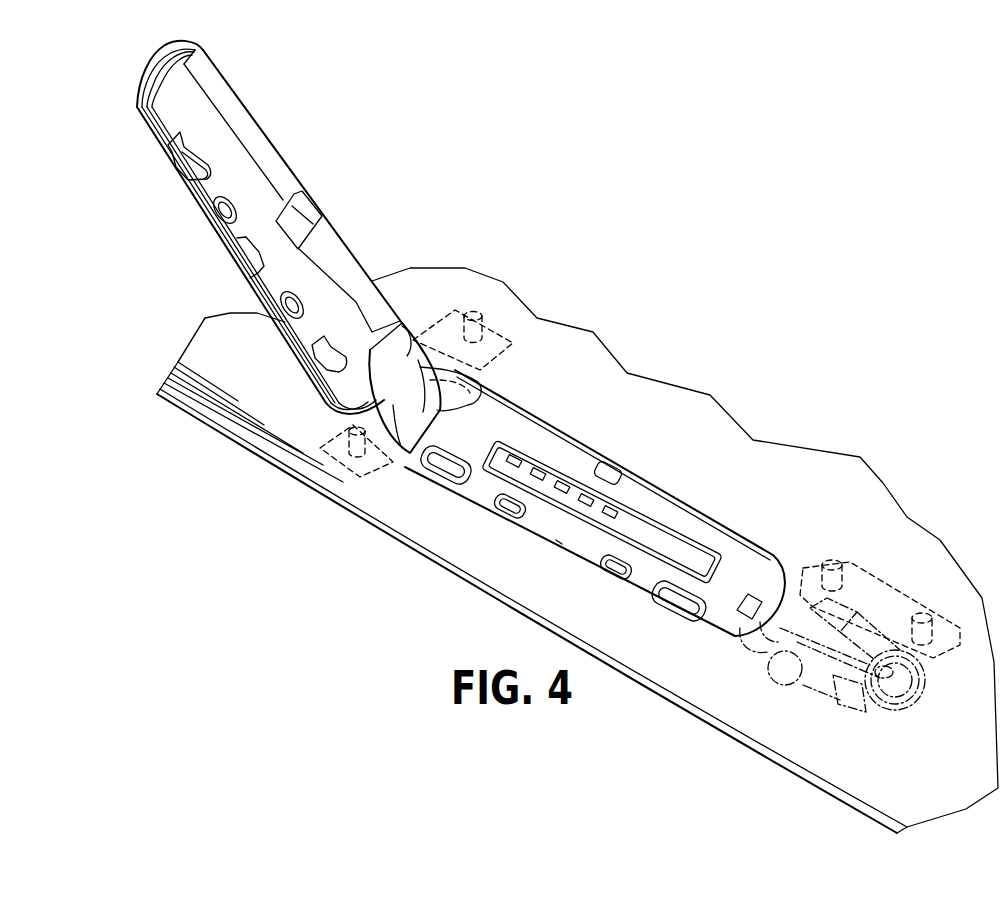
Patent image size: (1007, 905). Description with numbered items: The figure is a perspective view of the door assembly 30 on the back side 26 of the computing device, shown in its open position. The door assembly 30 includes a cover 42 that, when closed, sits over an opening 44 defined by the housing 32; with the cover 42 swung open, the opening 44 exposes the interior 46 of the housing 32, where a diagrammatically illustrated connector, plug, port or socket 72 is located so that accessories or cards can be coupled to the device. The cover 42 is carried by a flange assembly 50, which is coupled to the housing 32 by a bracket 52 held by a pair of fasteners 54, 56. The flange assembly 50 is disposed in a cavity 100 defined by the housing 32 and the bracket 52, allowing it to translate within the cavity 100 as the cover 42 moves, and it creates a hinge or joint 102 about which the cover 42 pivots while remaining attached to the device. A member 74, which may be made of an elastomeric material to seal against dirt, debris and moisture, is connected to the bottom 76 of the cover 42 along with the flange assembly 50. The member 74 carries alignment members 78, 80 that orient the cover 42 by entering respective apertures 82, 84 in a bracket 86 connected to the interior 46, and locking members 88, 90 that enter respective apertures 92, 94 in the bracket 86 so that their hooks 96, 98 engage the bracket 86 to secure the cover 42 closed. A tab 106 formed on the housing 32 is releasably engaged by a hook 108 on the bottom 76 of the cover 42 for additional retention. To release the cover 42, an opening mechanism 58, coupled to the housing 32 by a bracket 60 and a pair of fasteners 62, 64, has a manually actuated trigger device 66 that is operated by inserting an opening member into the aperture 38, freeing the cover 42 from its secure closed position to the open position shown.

The back side 26 is at (207, 354).
The door assembly 30 is at (677, 362).
The housing 32 is at (452, 574).
The aperture 38 is at (893, 678).
The cover 42 is at (253, 113).
The opening 44 is at (749, 545).
The interior 46 is at (553, 443).
The flange assembly 50 is at (415, 358).
The bracket 52 is at (513, 355).
The fastener 54 is at (480, 307).
The fastener 56 is at (377, 483).
The opening mechanism 58 is at (880, 710).
The bracket 60 is at (900, 588).
The fastener 62 is at (832, 556).
The fastener 64 is at (934, 614).
The trigger device 66 is at (850, 683).
The connector, plug, port or socket 72 is at (647, 512).
The member 74 is at (162, 93).
The bottom 76 is at (355, 407).
The alignment member 78 is at (213, 228).
The alignment member 80 is at (277, 330).
The aperture 82 is at (502, 518).
The aperture 84 is at (609, 576).
The bracket 86 is at (559, 541).
The locking member 88 is at (171, 137).
The locking member 90 is at (297, 357).
The aperture 92 is at (443, 487).
The aperture 94 is at (677, 610).
The hook 96 is at (195, 168).
The hook 98 is at (340, 372).
The cavity 100 is at (436, 442).
The hinge or joint 102 is at (484, 390).
The tab 106 is at (607, 470).
The hook 108 is at (313, 210).